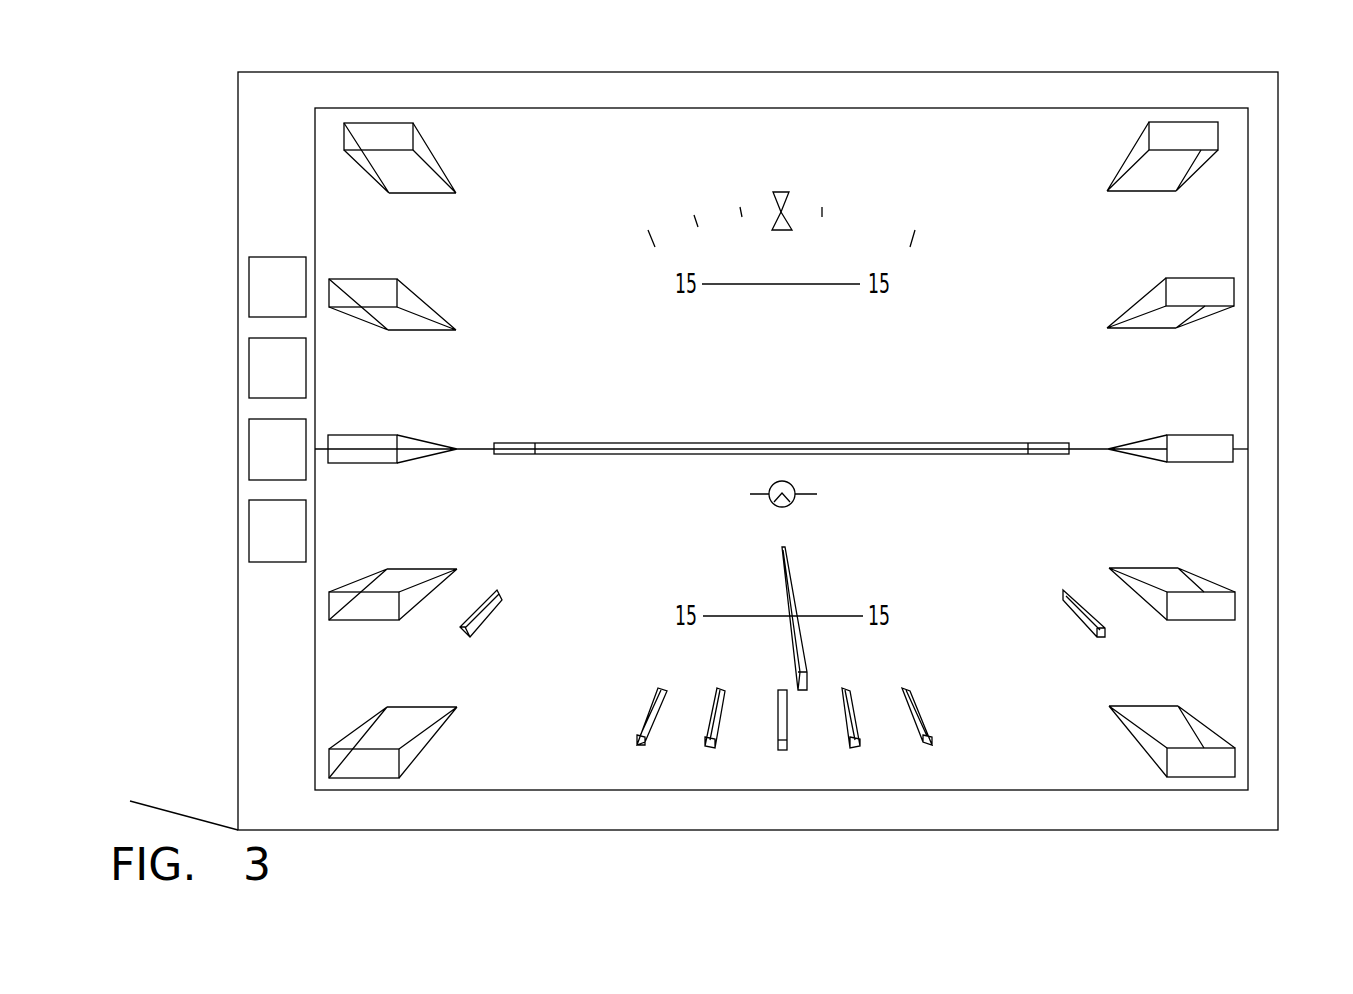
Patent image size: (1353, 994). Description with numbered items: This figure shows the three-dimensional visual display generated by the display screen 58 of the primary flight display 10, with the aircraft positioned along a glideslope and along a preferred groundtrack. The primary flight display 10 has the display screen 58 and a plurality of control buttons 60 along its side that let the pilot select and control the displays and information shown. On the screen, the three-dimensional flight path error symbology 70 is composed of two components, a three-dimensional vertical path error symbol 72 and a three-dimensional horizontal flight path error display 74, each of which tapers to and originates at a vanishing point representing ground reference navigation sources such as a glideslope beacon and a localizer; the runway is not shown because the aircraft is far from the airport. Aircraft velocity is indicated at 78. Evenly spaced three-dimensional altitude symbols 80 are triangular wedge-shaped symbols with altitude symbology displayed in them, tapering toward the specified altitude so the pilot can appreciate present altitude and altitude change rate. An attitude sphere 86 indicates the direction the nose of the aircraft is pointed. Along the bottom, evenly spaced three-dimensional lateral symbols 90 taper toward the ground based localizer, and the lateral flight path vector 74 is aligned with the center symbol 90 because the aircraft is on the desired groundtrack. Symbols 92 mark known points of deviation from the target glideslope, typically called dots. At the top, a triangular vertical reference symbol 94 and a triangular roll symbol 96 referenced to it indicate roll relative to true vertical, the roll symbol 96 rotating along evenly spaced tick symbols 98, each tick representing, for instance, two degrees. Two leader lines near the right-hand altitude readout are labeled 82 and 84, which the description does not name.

The primary flight display 10 is at (973, 72).
The display screen 58 is at (1050, 92).
The control buttons 60 is at (249, 368).
The 3D altitude symbols 80 is at (407, 283).
The tick symbols 98 is at (867, 222).
The triangular vertical reference symbol 94 is at (780, 192).
The triangular roll symbol 96 is at (781, 230).
The 3D flight path error symbology 70 is at (781, 475).
The 3D vertical path error symbol 72 is at (520, 456).
The pointer 82 is at (1090, 448).
The digital readout box 84 is at (1152, 435).
The attitude sphere 86 is at (793, 483).
The 3D horizontal flight path error display 74 is at (795, 600).
The 3D lateral symbols 90 is at (787, 725).
The deviation symbols 92 is at (490, 612).
The aircraft velocity indication 78 is at (1015, 666).